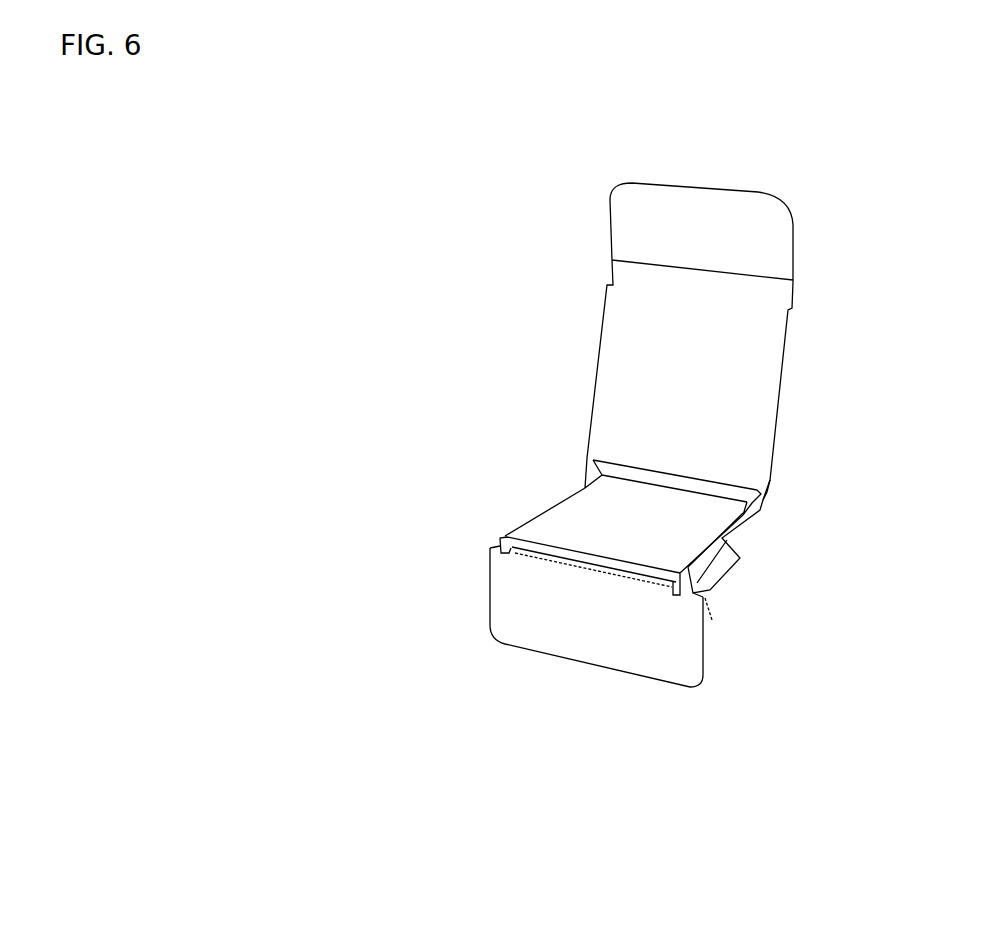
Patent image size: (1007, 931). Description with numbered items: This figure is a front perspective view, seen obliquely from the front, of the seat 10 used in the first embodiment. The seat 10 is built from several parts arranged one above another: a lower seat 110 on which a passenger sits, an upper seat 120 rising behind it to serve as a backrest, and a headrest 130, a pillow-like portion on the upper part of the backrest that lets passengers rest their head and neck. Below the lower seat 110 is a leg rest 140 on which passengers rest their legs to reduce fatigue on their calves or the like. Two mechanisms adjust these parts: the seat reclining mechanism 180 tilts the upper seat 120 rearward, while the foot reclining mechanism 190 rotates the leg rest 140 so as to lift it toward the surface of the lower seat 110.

The seat 10 is at (662, 515).
The lower seat 110 is at (578, 505).
The upper seat 120 is at (765, 386).
The headrest 130 is at (770, 231).
The leg rest 140 is at (513, 597).
The seat reclining mechanism 180 is at (760, 510).
The foot reclining mechanism 190 is at (713, 603).